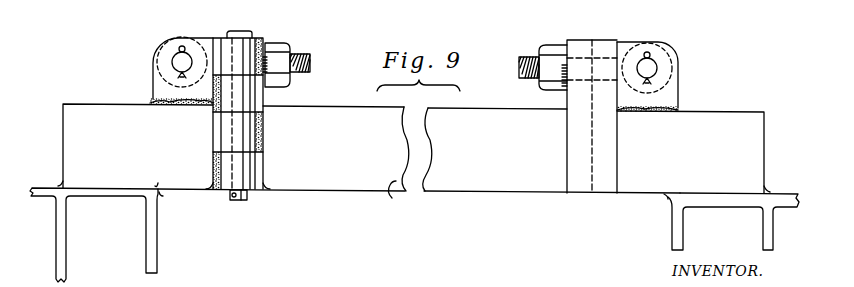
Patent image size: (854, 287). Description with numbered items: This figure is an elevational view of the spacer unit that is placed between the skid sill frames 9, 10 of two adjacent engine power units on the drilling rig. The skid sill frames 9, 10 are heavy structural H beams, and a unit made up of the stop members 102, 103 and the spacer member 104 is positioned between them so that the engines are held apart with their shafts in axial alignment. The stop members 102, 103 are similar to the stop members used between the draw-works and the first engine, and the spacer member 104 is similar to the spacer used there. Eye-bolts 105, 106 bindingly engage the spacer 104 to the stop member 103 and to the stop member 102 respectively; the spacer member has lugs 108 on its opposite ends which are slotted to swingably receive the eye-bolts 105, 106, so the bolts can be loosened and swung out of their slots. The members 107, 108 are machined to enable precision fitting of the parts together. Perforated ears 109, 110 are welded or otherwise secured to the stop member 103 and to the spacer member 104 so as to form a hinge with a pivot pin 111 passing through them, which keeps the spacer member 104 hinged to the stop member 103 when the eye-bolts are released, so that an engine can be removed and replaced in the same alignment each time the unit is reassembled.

The skid sill frame 9 is at (672, 206).
The skid sill frame 10 is at (148, 206).
The stop member 102 is at (745, 98).
The stop member 103 is at (112, 94).
The spacer member 104 is at (441, 181).
The eye-bolt 105 is at (309, 56).
The eye-bolt 106 is at (519, 37).
The machined member 107 is at (630, 30).
The lug 108 is at (590, 30).
The perforated ear 109 is at (268, 191).
The perforated ear 110 is at (209, 196).
The pin cap 111 is at (240, 34).